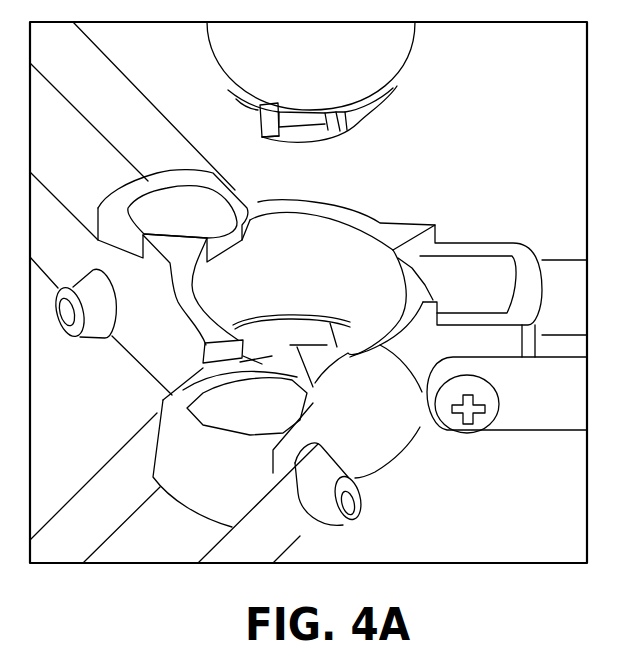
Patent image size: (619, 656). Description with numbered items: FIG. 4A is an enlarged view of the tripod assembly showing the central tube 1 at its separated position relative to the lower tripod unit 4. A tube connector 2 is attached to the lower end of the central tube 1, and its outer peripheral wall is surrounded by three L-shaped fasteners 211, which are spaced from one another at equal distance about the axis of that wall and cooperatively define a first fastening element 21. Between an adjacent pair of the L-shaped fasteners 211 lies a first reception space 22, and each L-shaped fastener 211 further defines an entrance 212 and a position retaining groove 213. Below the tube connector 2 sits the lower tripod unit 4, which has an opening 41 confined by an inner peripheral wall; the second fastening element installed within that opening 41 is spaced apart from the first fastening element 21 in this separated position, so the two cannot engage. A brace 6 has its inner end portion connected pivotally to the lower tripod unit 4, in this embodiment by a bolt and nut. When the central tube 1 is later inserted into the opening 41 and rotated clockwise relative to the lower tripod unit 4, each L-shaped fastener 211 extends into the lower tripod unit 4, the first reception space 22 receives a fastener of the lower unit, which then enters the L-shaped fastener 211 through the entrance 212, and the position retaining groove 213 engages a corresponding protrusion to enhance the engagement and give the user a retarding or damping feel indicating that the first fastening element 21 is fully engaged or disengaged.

The central tube 1 is at (422, 41).
The tube connector 2 is at (387, 106).
The first fastening element 21 is at (258, 125).
The first reception space 22 is at (246, 104).
The L-shaped fastener 211 is at (276, 140).
The entrance 212 is at (347, 116).
The position retaining groove 213 is at (334, 142).
The lower tripod unit 4 is at (518, 245).
The opening 41 is at (170, 396).
The brace 6 is at (527, 433).